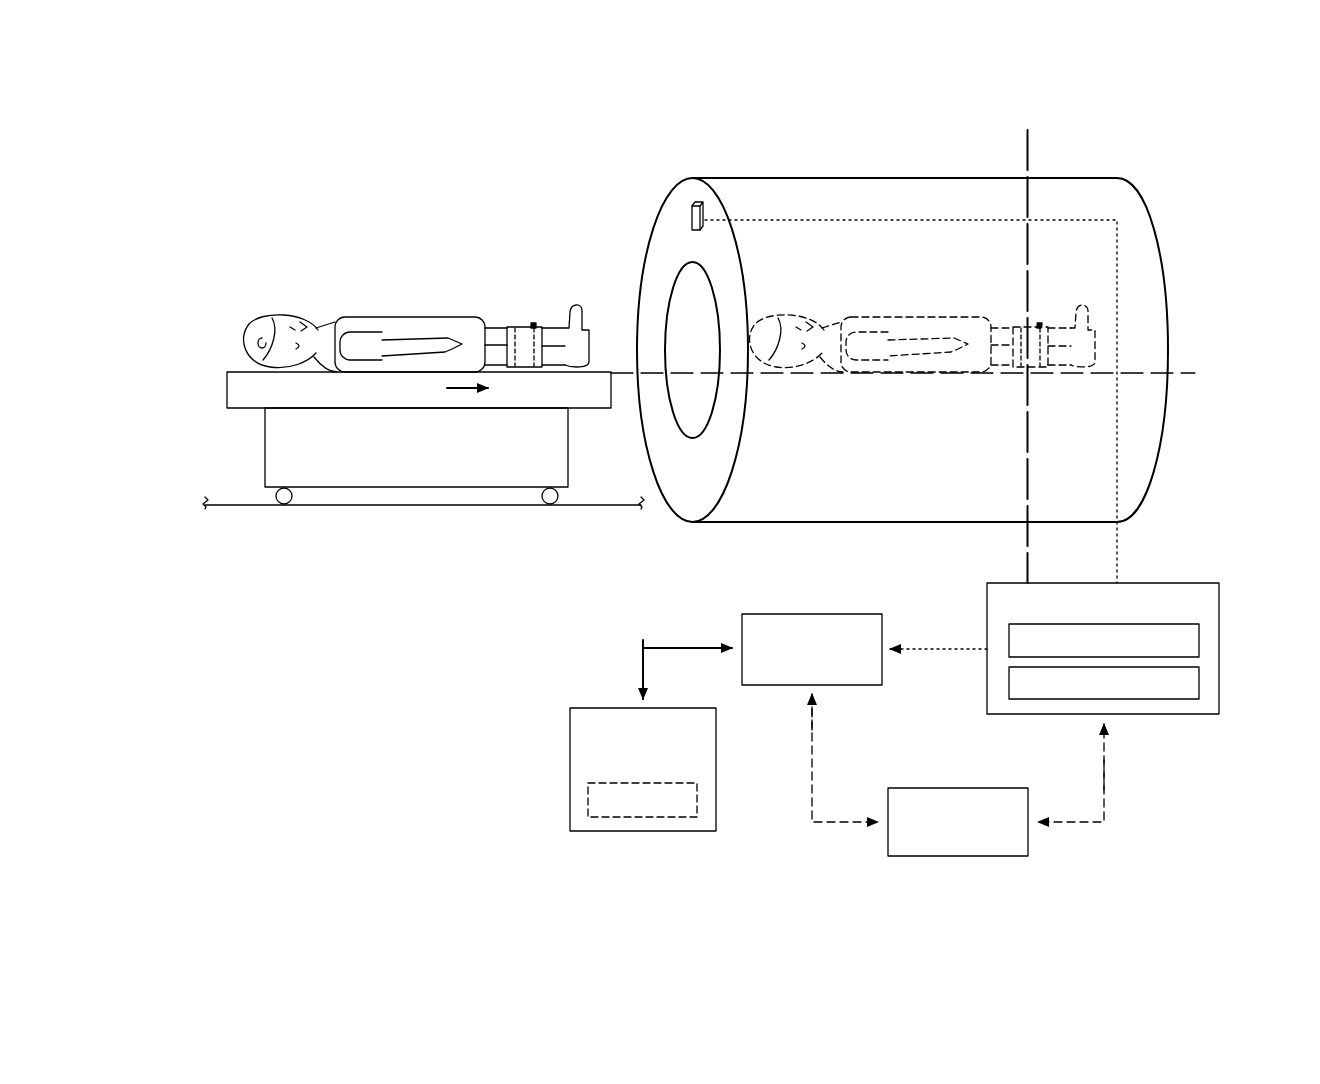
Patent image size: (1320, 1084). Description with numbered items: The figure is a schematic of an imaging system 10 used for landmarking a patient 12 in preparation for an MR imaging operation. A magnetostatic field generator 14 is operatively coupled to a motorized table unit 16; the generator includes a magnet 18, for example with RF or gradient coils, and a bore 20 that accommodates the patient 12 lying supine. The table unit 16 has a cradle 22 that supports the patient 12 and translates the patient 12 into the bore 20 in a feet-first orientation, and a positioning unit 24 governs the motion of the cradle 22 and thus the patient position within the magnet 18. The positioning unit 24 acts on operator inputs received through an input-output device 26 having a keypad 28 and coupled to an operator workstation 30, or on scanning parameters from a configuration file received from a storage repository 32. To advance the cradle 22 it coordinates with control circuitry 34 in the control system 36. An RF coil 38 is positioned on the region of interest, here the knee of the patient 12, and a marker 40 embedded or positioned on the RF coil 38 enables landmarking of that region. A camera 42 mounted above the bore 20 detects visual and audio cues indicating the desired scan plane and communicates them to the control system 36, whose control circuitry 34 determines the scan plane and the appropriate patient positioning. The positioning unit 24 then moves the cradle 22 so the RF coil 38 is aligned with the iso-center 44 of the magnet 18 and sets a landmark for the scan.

The imaging system 10 is at (306, 187).
The patient 12 is at (384, 312).
The magnetostatic field generator 14 is at (846, 170).
The motorized table unit 16 is at (430, 477).
The magnet 18 is at (1151, 256).
The bore 20 is at (687, 417).
The cradle 22 is at (232, 392).
The positioning unit 24 is at (1199, 683).
The input-output device 26 is at (586, 708).
The keypad 28 is at (588, 800).
The operator workstation 30 is at (808, 614).
The storage repository 32 is at (958, 788).
The control circuitry 34 is at (1199, 641).
The control system 36 is at (1197, 583).
The RF coil 38 is at (514, 327).
The marker 40 is at (534, 323).
The camera 42 is at (690, 215).
The iso-center 44 is at (1028, 151).